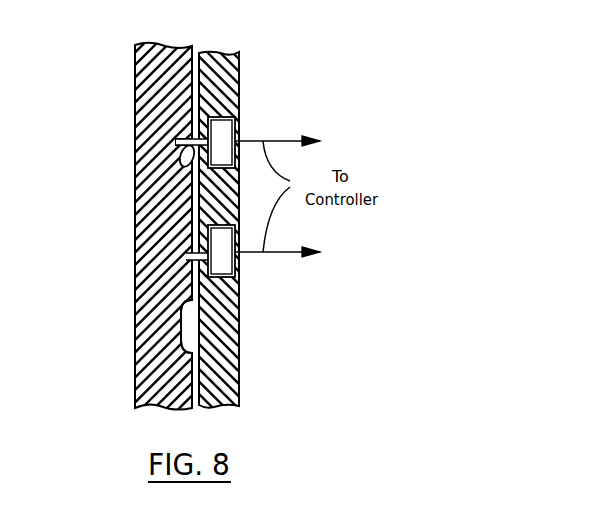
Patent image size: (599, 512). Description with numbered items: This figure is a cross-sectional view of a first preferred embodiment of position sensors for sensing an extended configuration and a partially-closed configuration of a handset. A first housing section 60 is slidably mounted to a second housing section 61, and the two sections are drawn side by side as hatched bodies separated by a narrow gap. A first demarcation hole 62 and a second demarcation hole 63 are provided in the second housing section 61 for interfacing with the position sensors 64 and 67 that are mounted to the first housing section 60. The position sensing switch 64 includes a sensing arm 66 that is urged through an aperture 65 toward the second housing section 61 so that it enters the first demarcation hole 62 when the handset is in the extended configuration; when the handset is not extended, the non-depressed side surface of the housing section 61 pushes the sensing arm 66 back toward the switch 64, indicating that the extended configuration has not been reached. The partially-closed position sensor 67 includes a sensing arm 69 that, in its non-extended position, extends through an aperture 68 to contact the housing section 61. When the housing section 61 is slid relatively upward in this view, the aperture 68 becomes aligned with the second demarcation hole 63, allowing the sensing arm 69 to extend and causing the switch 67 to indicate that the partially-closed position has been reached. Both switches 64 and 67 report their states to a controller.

The first housing section 60 is at (233, 373).
The second housing section 61 is at (142, 382).
The first demarcation hole 62 is at (165, 186).
The second demarcation hole 63 is at (180, 311).
The position sensing switch 64 is at (230, 129).
The aperture 65 is at (203, 110).
The sensing arm 66 is at (183, 143).
The partially-closed position sensor 67 is at (230, 262).
The aperture 68 is at (229, 316).
The sensing arm 69 is at (200, 250).